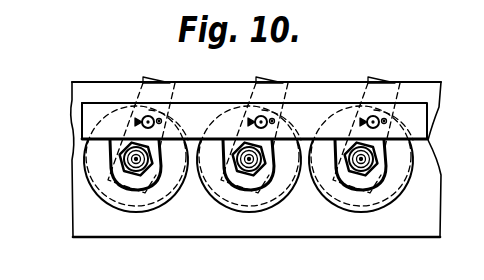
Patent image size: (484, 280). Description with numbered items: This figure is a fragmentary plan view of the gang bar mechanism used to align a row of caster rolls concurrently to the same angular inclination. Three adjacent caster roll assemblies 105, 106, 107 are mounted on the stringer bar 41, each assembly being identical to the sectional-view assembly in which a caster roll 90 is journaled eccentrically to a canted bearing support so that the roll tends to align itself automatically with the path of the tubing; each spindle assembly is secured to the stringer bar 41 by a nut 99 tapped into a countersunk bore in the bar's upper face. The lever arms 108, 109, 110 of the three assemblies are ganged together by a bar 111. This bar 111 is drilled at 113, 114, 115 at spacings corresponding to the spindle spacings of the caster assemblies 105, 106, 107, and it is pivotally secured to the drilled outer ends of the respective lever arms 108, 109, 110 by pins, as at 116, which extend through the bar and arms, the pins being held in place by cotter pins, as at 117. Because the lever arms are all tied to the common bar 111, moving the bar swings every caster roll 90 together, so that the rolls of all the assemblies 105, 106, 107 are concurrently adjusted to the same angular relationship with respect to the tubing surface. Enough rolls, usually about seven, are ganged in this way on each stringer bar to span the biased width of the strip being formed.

The stringer bar 41 is at (80, 201).
The caster roll 90 is at (172, 67).
The nut 99 is at (98, 154).
The caster roll assembly 105 is at (128, 210).
The caster roll assembly 106 is at (246, 211).
The caster roll assembly 107 is at (359, 211).
The lever arm 108 is at (160, 160).
The lever arm 109 is at (275, 160).
The lever arm 110 is at (387, 160).
The bar 111 is at (88, 117).
The drilled hole 113 is at (143, 117).
The drilled hole 114 is at (257, 118).
The drilled hole 115 is at (369, 118).
The pin 116 is at (163, 121).
The cotter pin 117 is at (388, 122).